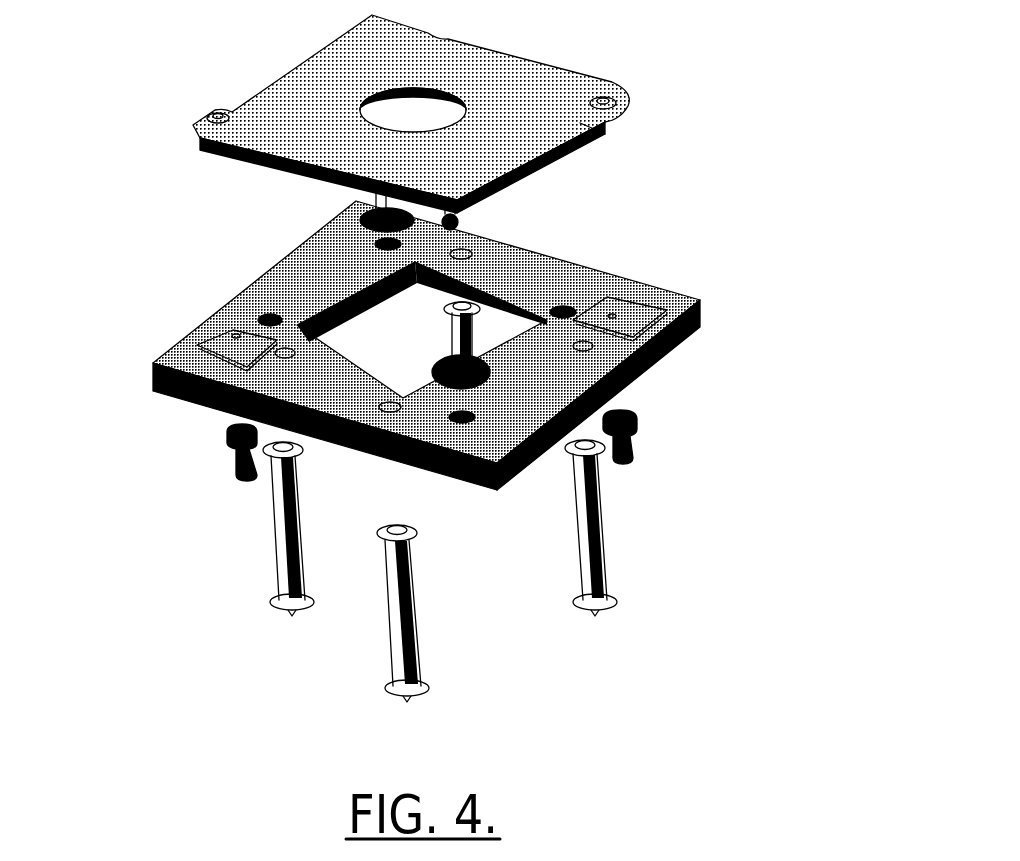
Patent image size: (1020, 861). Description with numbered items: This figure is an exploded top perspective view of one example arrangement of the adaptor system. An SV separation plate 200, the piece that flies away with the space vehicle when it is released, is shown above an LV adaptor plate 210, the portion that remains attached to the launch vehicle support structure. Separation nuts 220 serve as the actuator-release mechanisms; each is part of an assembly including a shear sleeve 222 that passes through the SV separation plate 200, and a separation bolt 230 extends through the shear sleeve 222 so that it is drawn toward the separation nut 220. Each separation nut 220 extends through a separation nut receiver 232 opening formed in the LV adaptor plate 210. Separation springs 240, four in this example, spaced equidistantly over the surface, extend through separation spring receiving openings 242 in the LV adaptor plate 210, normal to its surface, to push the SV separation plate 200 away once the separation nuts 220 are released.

The SV separation plate 200 is at (322, 80).
The LV adaptor plate 210 is at (276, 282).
The separation nut 220 is at (235, 456).
The shear sleeve 222 is at (214, 113).
The separation bolt 230 is at (604, 133).
The separation nut receiver 232 is at (232, 334).
The separation spring 240 is at (281, 553).
The separation spring receiving opening 242 is at (463, 252).